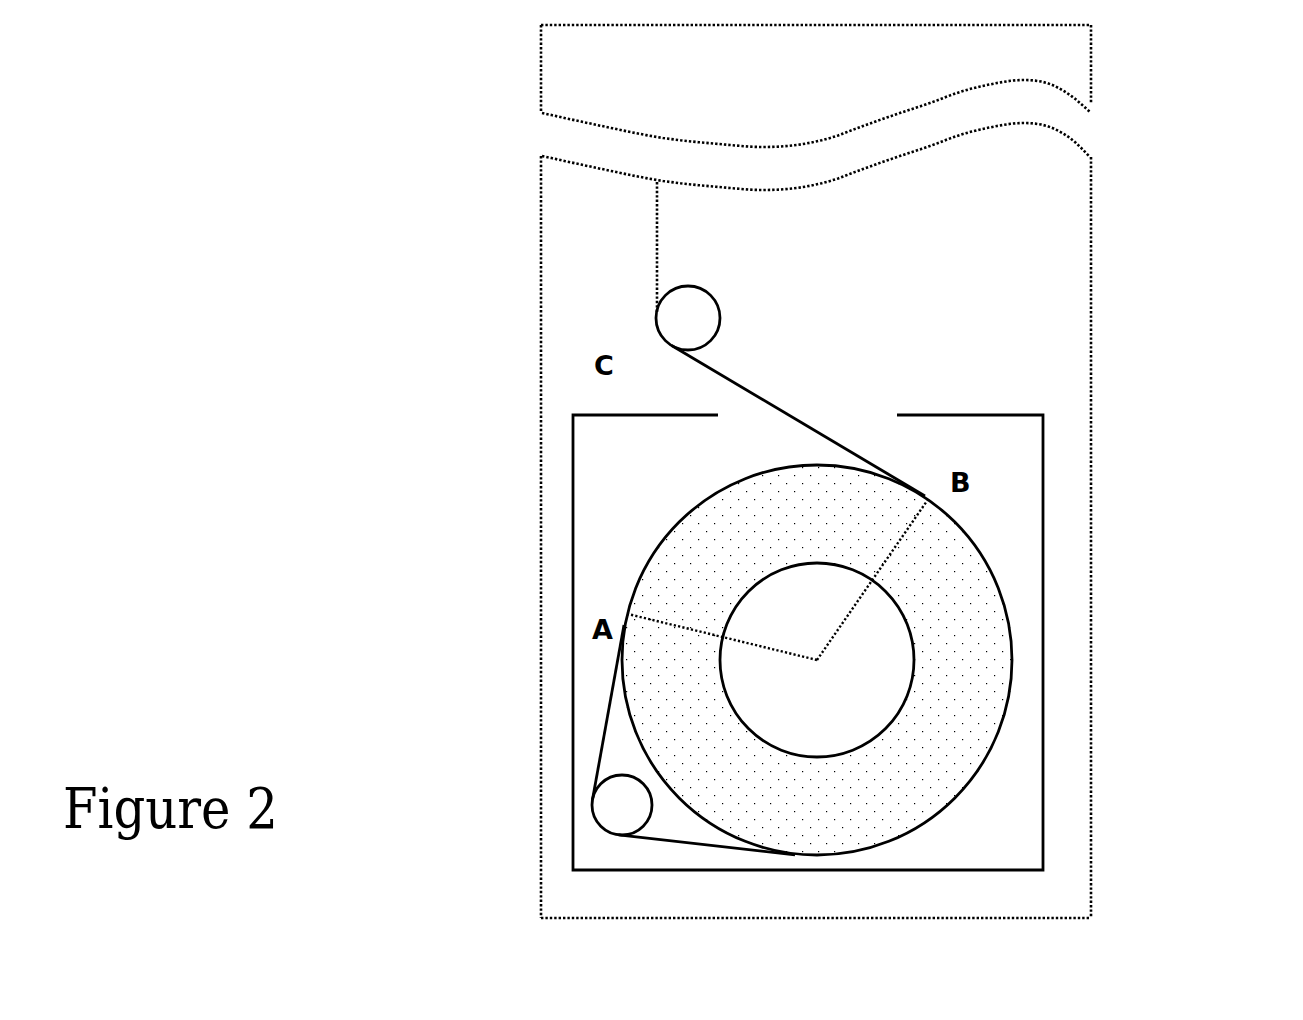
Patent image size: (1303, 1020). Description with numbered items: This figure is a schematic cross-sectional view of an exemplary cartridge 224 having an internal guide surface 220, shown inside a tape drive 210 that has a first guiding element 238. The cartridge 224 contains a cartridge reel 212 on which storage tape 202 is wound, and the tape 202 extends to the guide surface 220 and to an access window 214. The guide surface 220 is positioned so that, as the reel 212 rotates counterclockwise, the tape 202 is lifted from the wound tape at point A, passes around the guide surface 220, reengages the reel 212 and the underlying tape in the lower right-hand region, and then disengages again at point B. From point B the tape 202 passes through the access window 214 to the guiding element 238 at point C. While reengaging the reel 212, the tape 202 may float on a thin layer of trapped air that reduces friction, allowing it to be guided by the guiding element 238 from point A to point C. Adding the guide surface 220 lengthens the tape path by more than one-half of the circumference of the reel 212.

The tape drive 210 is at (1091, 320).
The cartridge 224 is at (1043, 630).
The cartridge reel 212 is at (882, 709).
The first guiding element 238 is at (686, 302).
The access window 214 is at (848, 415).
The storage tape 202 is at (605, 723).
The guide surface 220 is at (605, 805).